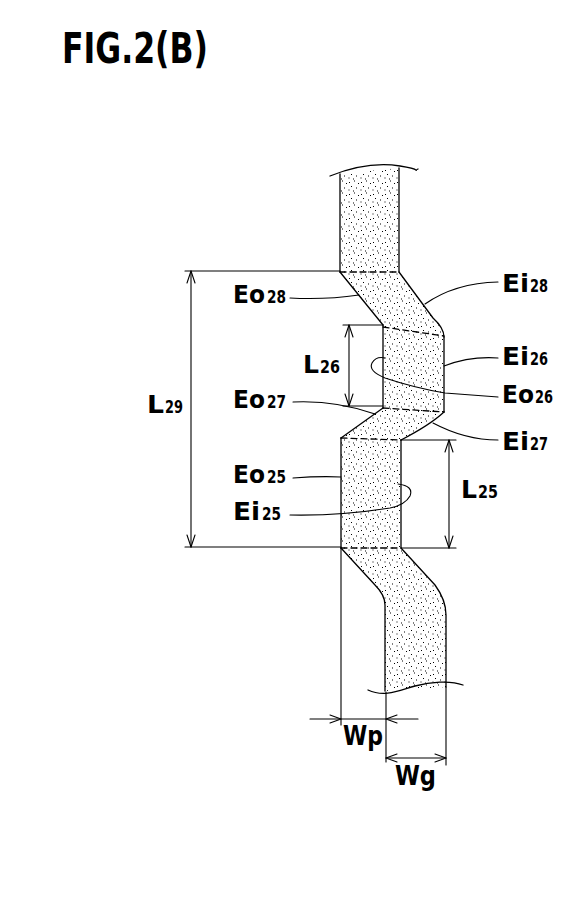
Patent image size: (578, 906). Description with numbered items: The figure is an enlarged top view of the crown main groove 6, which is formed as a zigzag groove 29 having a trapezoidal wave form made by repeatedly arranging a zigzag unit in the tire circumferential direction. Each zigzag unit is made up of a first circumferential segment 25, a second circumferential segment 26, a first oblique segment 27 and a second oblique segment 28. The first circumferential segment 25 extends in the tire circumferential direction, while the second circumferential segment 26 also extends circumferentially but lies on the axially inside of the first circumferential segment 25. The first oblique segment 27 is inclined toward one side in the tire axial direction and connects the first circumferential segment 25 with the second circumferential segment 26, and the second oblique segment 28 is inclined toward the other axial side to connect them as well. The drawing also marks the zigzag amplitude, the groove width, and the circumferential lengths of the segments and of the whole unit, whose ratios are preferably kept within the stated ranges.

The crown main groove 6 is at (396, 390).
The zigzag groove 29 is at (370, 202).
The second oblique segment 28 is at (400, 295).
The second circumferential segment 26 is at (407, 350).
The first oblique segment 27 is at (387, 420).
The first circumferential segment 25 is at (367, 528).